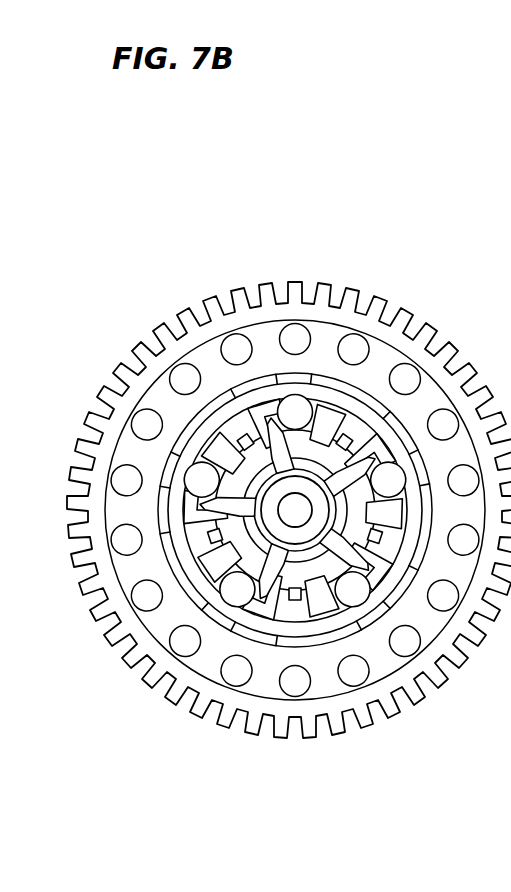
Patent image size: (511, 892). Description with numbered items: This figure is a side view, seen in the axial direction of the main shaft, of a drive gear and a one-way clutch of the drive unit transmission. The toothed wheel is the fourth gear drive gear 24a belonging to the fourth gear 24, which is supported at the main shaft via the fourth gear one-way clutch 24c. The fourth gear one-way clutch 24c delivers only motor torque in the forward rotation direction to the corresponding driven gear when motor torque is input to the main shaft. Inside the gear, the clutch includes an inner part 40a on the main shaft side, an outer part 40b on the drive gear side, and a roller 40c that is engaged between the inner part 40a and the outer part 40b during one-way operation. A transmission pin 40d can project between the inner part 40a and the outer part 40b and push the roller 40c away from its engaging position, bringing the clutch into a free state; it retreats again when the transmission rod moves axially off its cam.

The fourth gear 24 is at (289, 441).
The fourth gear drive gear 24a is at (297, 283).
The fourth gear one-way clutch 24c is at (380, 416).
The inner part 40a is at (325, 433).
The outer part 40b is at (308, 400).
The roller 40c is at (288, 405).
The transmission pin 40d is at (280, 443).